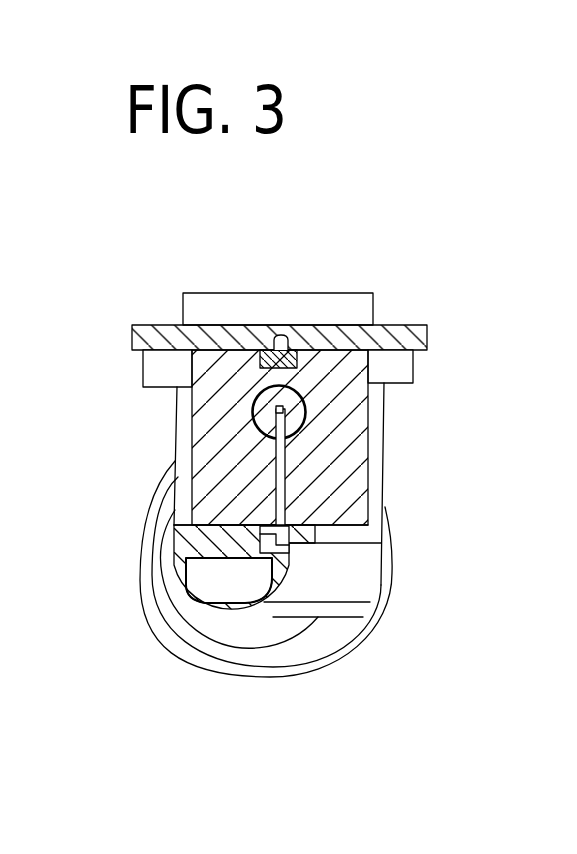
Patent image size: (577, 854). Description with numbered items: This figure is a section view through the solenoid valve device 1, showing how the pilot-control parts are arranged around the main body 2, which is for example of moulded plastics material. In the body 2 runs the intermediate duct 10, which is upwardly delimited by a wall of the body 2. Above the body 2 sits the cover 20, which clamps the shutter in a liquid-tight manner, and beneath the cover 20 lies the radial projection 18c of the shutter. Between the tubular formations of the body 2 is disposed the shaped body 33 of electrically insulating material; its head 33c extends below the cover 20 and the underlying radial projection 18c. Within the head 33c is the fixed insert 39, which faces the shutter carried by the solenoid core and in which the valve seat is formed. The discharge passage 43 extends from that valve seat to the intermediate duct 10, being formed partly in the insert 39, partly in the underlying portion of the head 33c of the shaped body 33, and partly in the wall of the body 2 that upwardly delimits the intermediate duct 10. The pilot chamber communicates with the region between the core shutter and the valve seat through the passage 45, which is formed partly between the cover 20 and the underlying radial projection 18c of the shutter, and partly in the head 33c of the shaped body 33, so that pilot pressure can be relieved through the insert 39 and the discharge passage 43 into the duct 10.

The solenoid valve device 1 is at (425, 252).
The body 2 is at (249, 638).
The intermediate duct 10 is at (204, 600).
The radial projection 18c is at (288, 336).
The cover 20 is at (200, 342).
The shaped body 33 is at (392, 414).
The head 33c is at (340, 468).
The fixed insert 39 is at (268, 406).
The discharge passage 43 is at (276, 456).
The passage 45 is at (282, 336).